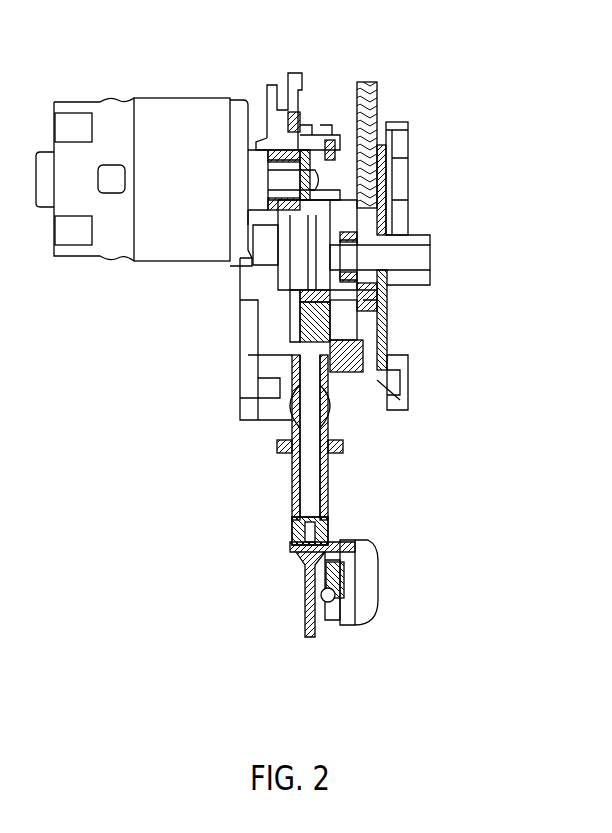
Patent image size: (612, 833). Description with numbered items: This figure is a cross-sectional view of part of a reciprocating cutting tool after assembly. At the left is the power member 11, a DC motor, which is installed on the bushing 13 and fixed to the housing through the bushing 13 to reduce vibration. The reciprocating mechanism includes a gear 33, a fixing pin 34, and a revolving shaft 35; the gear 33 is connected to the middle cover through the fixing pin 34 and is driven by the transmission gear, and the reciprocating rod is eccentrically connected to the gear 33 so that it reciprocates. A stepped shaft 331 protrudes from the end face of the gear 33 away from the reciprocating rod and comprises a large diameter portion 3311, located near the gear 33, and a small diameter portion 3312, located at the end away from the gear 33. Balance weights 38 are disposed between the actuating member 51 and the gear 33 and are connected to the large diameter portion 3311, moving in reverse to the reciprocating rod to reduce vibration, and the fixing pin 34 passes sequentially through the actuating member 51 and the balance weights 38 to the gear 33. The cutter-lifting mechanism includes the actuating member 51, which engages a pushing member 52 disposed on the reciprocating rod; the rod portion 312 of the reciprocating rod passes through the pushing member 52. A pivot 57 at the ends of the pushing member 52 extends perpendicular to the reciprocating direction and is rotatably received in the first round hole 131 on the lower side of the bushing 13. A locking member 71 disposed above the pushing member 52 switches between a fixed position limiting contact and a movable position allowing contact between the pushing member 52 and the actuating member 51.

The power member 11 is at (146, 108).
The bushing 13 is at (277, 86).
The first round hole 131 is at (248, 406).
The balance weights 38 is at (378, 92).
The stepped shaft 331 is at (494, 118).
The large diameter portion 3311 is at (397, 160).
The small diameter portion 3312 is at (388, 227).
The revolving shaft 35 is at (408, 262).
The fixing pin 34 is at (330, 300).
The gear 33 is at (348, 316).
The actuating member 51 is at (392, 296).
The pushing member 52 is at (398, 392).
The pivot 57 is at (262, 388).
The rod portion 312 is at (283, 448).
The locking member 71 is at (346, 362).